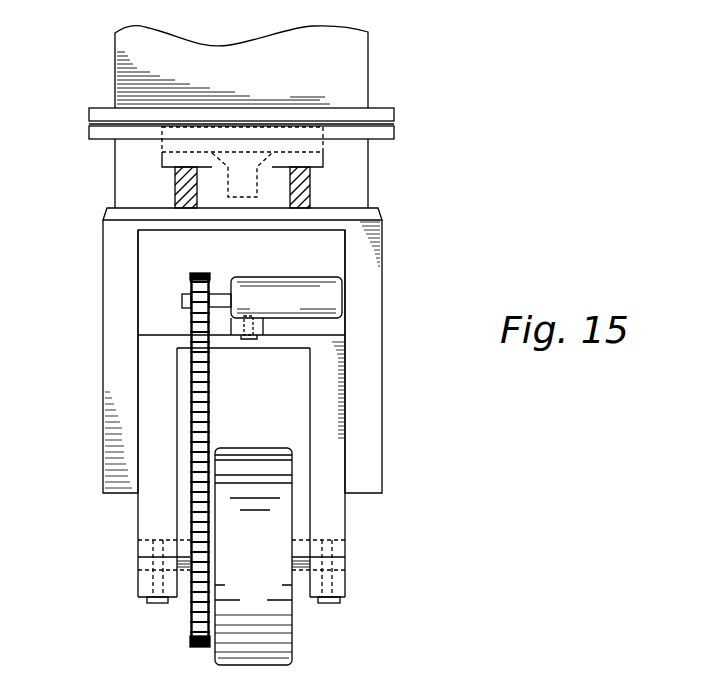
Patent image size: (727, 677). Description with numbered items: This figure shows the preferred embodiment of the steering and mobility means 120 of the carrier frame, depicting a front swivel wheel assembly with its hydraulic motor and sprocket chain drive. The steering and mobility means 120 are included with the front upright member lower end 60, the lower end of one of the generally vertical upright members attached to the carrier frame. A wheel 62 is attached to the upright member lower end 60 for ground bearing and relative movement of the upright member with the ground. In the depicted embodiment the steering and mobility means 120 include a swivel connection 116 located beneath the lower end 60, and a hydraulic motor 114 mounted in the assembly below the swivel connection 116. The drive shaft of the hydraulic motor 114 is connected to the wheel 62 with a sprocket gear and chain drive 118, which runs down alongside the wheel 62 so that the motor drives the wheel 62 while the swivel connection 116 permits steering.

The lower end 60 is at (368, 71).
The wheel 62 is at (292, 632).
The hydraulic motor 114 is at (327, 293).
The swivel connection 116 is at (368, 167).
The sprocket gear and chain drive 118 is at (191, 325).
The steering and mobility means 120 is at (384, 457).